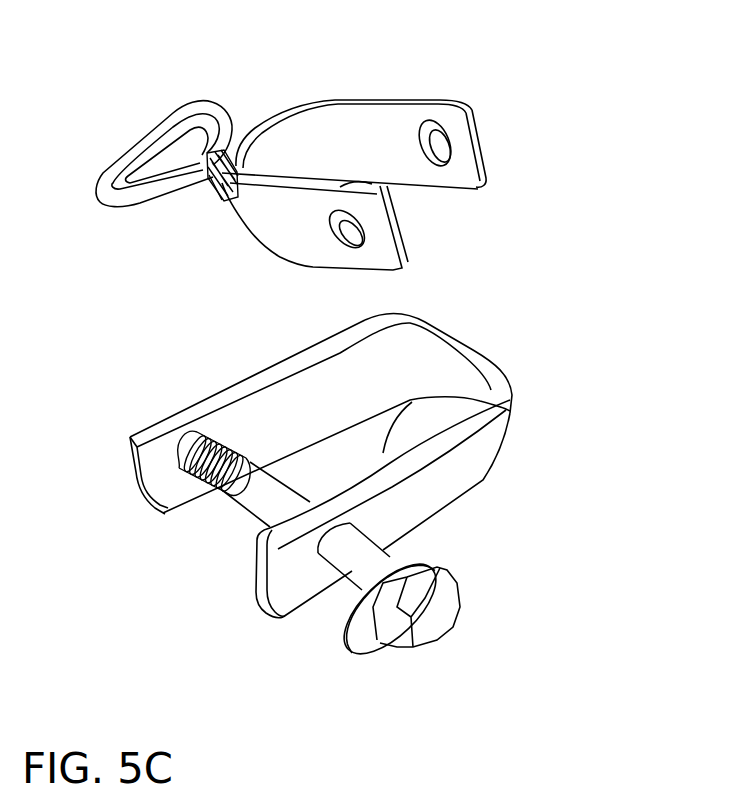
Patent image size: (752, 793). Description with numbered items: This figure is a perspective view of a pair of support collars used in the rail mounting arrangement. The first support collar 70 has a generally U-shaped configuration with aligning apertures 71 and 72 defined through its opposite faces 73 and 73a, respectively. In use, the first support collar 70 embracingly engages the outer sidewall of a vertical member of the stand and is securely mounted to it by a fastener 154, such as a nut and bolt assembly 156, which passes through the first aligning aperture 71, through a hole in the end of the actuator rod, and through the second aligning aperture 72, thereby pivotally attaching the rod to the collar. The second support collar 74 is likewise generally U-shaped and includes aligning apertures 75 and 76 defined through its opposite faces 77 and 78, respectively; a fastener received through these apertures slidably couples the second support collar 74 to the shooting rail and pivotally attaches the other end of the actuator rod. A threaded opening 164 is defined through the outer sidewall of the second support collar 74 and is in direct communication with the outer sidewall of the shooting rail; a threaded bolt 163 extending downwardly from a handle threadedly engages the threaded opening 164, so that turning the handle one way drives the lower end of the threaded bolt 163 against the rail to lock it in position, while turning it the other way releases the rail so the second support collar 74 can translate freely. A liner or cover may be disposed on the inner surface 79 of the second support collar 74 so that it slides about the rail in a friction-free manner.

The first support collar 70 is at (470, 342).
The first aligning aperture 71 is at (182, 457).
The second aligning aperture 72 is at (342, 524).
The face 73 is at (252, 425).
The opposite face 73a is at (507, 400).
The second support collar 74 is at (360, 100).
The first aligning aperture 75 is at (330, 227).
The second aligning aperture 76 is at (437, 127).
The face 77 is at (400, 187).
The opposite face 78 is at (470, 176).
The inner surface 79 is at (343, 137).
The threaded bolt 163 is at (214, 162).
The threaded opening 164 is at (217, 192).
The fastener 154 is at (335, 592).
The nut and bolt assembly 156 is at (416, 607).